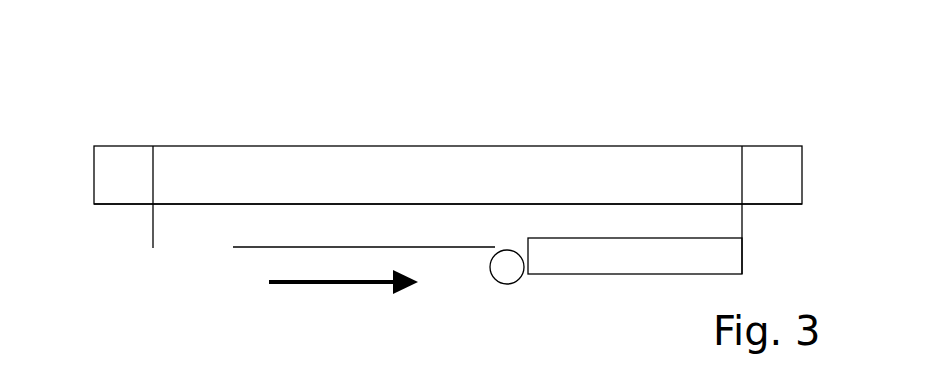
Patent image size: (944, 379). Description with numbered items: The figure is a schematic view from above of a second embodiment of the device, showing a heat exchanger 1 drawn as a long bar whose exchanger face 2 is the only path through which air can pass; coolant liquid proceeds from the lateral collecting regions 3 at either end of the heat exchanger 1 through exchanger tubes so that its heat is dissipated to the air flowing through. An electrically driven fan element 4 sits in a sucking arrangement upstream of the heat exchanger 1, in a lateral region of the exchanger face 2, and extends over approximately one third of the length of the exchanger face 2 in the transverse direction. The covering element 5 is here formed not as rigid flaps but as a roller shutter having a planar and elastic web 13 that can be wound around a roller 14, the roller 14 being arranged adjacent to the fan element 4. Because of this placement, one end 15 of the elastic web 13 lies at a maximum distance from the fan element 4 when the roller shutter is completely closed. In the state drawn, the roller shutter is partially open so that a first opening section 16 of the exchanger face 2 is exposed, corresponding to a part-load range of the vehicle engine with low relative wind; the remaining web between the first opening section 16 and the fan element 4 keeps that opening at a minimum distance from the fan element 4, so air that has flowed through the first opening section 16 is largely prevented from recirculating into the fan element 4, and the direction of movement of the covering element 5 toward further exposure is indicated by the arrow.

The heat exchanger 1 is at (520, 127).
The exchanger face 2 is at (318, 203).
The lateral collecting regions 3 is at (118, 168).
The fan element 4 is at (615, 253).
The covering element 5 is at (473, 312).
The elastic web 13 is at (282, 248).
The roller 14 is at (507, 272).
The end of the elastic web 15 is at (230, 255).
The first opening section 16 is at (176, 255).